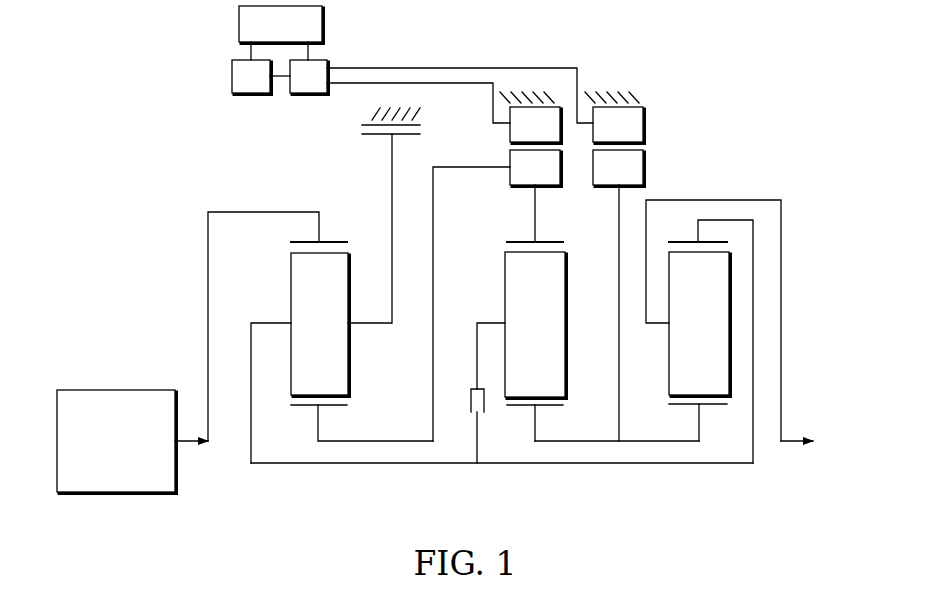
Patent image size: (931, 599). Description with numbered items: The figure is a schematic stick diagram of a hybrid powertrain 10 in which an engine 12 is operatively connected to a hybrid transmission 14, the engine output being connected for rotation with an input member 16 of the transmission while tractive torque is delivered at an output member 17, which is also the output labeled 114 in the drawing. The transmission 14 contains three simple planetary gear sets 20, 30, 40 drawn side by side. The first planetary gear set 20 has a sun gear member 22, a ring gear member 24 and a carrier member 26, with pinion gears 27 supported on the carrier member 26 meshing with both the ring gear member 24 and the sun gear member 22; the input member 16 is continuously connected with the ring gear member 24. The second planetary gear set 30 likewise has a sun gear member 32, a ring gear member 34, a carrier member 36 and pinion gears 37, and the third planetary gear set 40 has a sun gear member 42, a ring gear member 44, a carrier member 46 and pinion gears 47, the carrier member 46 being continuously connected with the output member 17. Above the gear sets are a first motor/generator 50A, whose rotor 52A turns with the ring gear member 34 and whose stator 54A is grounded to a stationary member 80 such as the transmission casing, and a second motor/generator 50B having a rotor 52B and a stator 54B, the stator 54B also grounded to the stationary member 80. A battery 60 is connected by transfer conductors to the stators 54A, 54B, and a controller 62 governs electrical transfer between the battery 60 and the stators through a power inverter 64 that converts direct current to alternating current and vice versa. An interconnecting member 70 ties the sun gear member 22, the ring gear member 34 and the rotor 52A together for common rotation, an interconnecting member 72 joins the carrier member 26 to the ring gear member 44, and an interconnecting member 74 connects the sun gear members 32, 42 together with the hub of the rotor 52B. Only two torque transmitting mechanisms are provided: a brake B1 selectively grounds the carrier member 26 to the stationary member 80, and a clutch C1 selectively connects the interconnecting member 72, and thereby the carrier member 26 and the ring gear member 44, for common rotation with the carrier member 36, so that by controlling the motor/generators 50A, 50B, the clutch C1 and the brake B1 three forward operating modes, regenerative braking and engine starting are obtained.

The hybrid powertrain 10 is at (166, 148).
The engine 12 is at (105, 450).
The hybrid transmission 14 is at (697, 171).
The input member 16 is at (186, 442).
The output member 17 is at (792, 440).
The first planetary gear set 20 is at (290, 418).
The sun gear member 22 is at (333, 408).
The ring gear member 24 is at (306, 241).
The carrier member 26 is at (272, 323).
The pinion gears 27 is at (309, 335).
The second planetary gear set 30 is at (568, 402).
The sun gear member 32 is at (550, 407).
The ring gear member 34 is at (548, 241).
The carrier member 36 is at (495, 323).
The pinion gears 37 is at (524, 335).
The third planetary gear set 40 is at (738, 413).
The sun gear member 42 is at (713, 408).
The ring gear member 44 is at (685, 241).
The carrier member 46 is at (658, 324).
The pinion gears 47 is at (688, 329).
The first motor/generator 50A is at (493, 145).
The rotor 52A is at (520, 177).
The stator 54A is at (520, 134).
The second motor/generator 50B is at (664, 135).
The rotor 52B is at (603, 177).
The stator 54B is at (603, 134).
The battery 60 is at (269, 34).
The controller 62 is at (240, 86).
The power inverter 64 is at (297, 86).
The interconnecting member 70 is at (433, 390).
The interconnecting member 72 is at (380, 463).
The interconnecting member 74 is at (658, 443).
The stationary member 80 is at (375, 108).
The output member 114 is at (788, 190).
The brake B1 is at (432, 125).
The clutch C1 is at (485, 425).